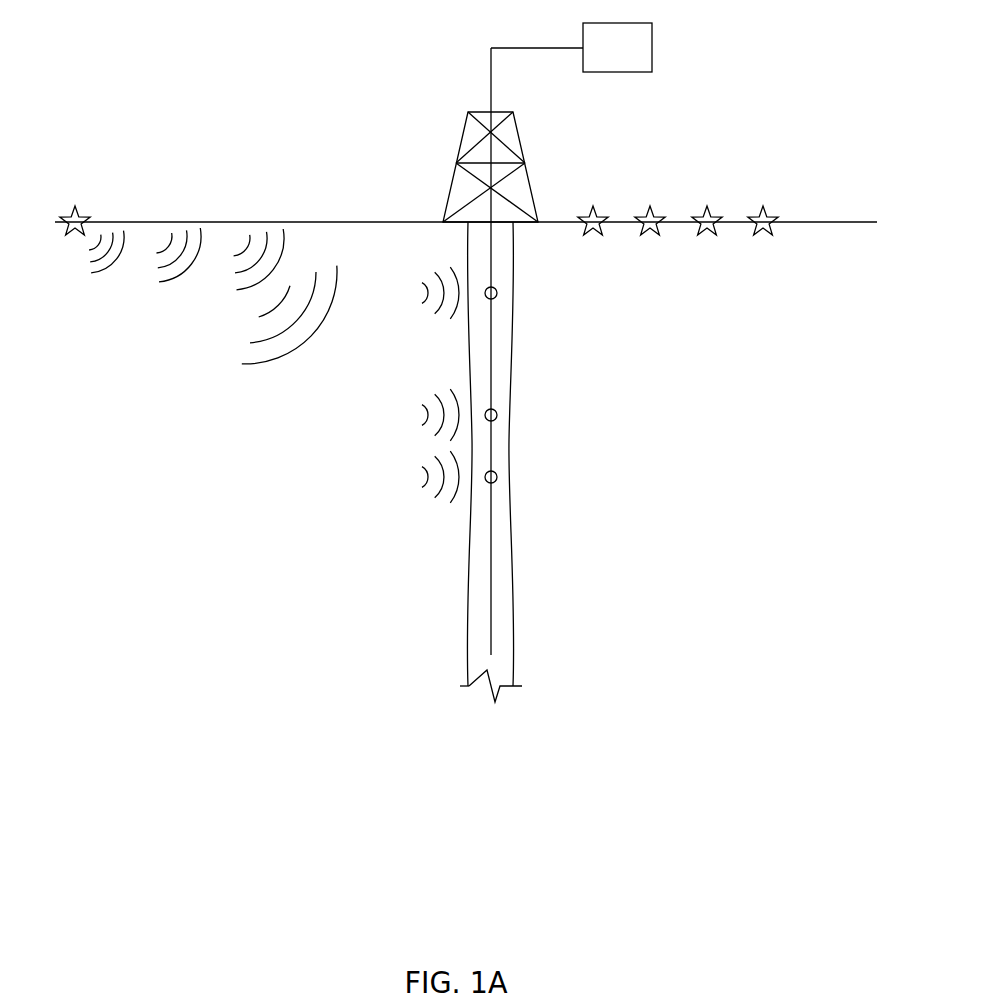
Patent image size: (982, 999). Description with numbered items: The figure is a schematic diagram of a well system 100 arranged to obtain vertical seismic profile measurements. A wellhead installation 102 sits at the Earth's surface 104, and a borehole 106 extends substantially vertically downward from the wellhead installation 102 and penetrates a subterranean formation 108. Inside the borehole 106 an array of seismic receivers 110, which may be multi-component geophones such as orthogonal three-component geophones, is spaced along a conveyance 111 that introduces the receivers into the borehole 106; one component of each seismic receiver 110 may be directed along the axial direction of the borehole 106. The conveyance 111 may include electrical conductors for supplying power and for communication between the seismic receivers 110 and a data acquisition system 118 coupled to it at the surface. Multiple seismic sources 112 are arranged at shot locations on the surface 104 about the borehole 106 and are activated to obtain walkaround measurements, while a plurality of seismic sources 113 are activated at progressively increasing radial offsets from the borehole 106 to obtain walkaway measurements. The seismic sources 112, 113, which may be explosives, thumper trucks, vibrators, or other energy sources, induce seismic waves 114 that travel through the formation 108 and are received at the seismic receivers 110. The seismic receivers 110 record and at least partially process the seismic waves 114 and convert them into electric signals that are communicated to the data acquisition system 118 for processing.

The well system 100 is at (670, 128).
The wellhead installation 102 is at (450, 131).
The Earth's surface 104 is at (313, 221).
The borehole 106 is at (515, 622).
The subterranean formation 108 is at (690, 457).
The seismic receivers 110 is at (497, 293).
The conveyance 111 is at (492, 565).
The seismic sources 112 is at (74, 207).
The seismic sources 113 is at (706, 240).
The seismic waves 114 is at (212, 316).
The data acquisition system 118 is at (603, 62).